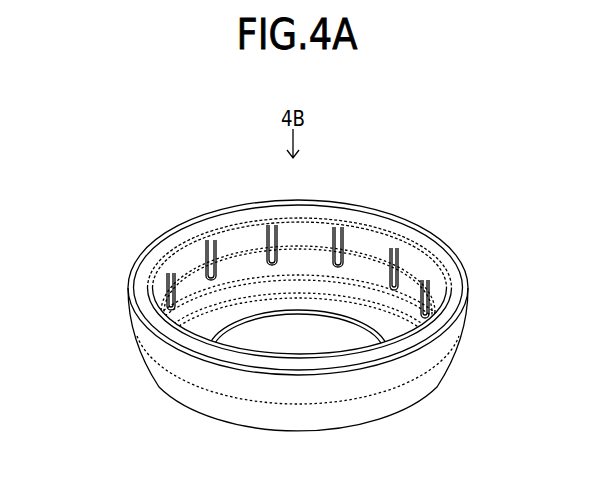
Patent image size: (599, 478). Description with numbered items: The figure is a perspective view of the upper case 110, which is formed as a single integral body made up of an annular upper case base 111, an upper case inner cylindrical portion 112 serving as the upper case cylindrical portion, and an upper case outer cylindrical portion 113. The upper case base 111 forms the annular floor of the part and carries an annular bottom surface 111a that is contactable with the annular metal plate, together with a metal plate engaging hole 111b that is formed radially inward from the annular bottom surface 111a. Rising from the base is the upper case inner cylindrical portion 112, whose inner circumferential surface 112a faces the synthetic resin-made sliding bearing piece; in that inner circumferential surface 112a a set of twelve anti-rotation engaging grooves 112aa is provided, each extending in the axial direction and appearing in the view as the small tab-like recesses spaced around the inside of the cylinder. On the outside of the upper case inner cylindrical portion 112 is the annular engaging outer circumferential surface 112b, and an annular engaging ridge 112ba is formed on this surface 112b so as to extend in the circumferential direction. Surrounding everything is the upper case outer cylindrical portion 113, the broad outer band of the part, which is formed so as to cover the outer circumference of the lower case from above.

The upper case 110 is at (87, 203).
The upper case base 111 is at (373, 323).
The annular bottom surface 111a is at (358, 298).
The metal plate engaging hole 111b is at (229, 322).
The upper case inner cylindrical portion 112 is at (362, 229).
The inner circumferential surface 112a is at (305, 256).
The anti-rotation engaging groove 112aa is at (270, 257).
The annular engaging outer circumferential surface 112b is at (370, 358).
The annular engaging ridge 112ba is at (427, 328).
The upper case outer cylindrical portion 113 is at (461, 312).